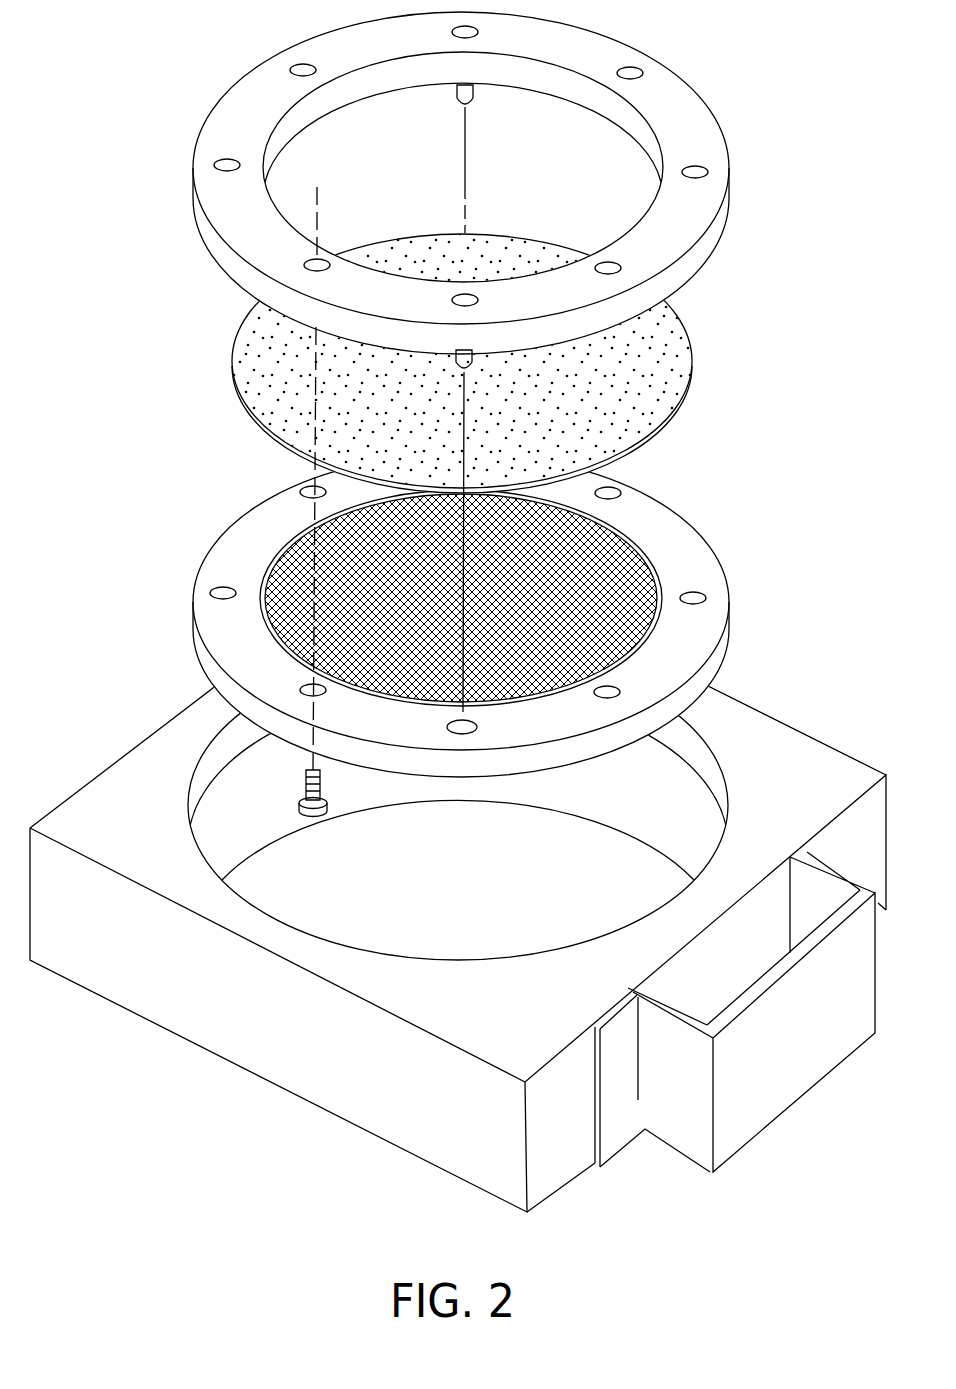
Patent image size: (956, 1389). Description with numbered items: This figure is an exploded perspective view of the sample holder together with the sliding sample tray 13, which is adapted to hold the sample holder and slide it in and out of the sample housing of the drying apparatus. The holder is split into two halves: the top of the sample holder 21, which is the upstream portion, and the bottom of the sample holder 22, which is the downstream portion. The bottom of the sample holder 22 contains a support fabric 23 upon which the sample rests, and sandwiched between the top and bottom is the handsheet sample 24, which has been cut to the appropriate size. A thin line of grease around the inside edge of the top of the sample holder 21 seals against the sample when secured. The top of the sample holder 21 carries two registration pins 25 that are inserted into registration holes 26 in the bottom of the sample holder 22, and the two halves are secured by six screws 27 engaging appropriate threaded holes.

The sliding sample tray 13 is at (761, 742).
The top of the sample holder 21 is at (697, 124).
The bottom of the sample holder 22 is at (695, 583).
The support fabric 23 is at (618, 568).
The handsheet sample 24 is at (665, 359).
The registration pins 25 is at (479, 100).
The registration holes 26 is at (477, 727).
The screws 27 is at (328, 808).